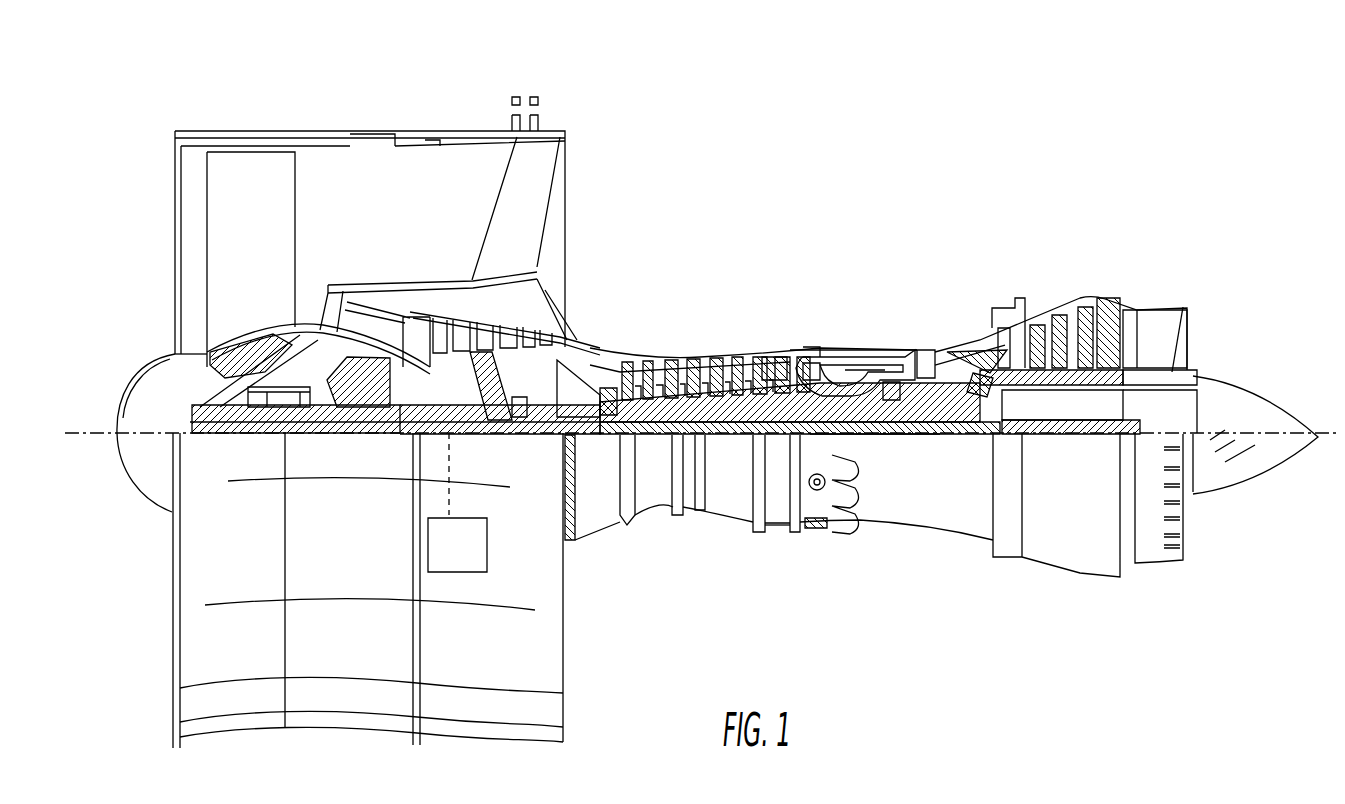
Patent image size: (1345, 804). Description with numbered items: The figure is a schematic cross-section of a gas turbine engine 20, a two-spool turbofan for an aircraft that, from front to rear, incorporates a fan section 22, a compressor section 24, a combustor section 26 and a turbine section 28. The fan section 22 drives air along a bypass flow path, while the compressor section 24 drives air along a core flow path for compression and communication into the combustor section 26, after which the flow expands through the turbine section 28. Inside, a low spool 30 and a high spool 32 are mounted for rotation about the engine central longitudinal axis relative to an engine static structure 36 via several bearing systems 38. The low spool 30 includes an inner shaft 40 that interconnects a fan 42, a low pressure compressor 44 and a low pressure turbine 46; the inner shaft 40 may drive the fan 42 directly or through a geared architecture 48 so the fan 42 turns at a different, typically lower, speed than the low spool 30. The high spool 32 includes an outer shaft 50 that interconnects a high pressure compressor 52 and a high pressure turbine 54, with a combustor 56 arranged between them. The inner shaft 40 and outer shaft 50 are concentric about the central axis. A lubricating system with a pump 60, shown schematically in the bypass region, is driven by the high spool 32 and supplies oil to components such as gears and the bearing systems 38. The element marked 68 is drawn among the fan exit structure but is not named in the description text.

The gas turbine engine 20 is at (925, 160).
The fan section 22 is at (276, 122).
The compressor section 24 is at (618, 337).
The combustor section 26 is at (858, 310).
The turbine section 28 is at (1006, 283).
The low spool 30 is at (733, 438).
The high spool 32 is at (780, 350).
The engine static structure 36 is at (777, 527).
The bearing systems 38 is at (522, 435).
The inner shaft 40 is at (587, 442).
The fan 42 is at (251, 259).
The low pressure compressor 44 is at (537, 282).
The low pressure turbine 46 is at (1060, 305).
The geared architecture 48 is at (370, 425).
The outer shaft 50 is at (870, 435).
The high pressure compressor 52 is at (700, 362).
The high pressure turbine 54 is at (928, 345).
The combustor 56 is at (860, 365).
The pump 60 is at (457, 545).
The fan exit guide vanes 68 is at (528, 200).